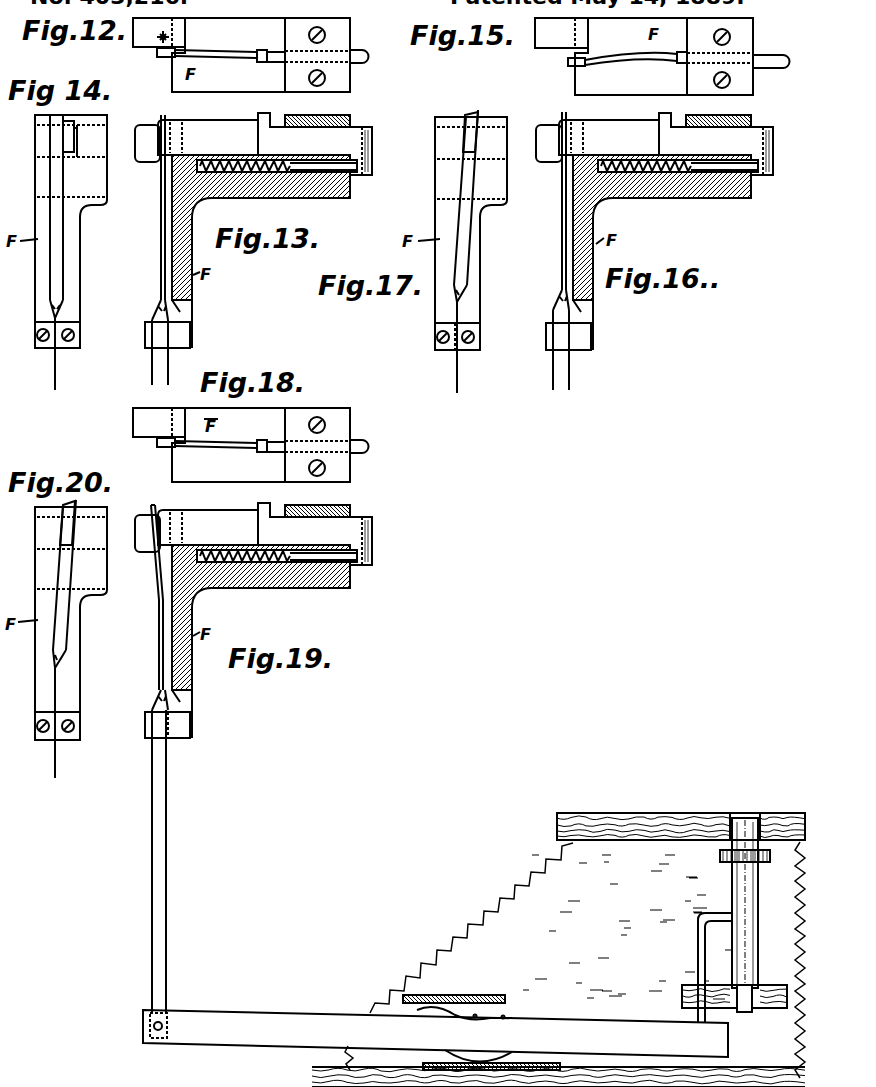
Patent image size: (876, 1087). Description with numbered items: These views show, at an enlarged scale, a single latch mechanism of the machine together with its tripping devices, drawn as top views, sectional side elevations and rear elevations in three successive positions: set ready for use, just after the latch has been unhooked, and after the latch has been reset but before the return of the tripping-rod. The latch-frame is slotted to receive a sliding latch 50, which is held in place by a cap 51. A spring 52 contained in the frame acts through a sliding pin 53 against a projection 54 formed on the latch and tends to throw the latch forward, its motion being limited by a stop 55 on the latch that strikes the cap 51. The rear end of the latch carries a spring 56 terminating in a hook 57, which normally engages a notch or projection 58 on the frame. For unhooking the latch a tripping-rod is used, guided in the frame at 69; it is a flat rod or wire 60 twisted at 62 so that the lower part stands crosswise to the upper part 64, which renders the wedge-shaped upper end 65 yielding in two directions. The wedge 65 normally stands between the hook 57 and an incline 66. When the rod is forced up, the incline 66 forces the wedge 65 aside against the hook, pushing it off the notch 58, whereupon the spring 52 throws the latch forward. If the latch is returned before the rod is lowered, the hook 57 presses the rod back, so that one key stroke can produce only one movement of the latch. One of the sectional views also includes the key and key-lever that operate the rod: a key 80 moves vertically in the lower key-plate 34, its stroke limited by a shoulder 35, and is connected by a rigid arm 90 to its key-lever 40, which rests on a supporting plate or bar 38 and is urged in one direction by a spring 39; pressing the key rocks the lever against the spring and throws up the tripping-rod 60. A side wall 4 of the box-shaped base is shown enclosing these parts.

In FIG. 19, the side wall 4 is at (507, 947).
In FIG. 19, the lower key-plate 34 is at (683, 996).
In FIG. 19, the shoulder 35 is at (720, 854).
In FIG. 19, the supporting plate or bar 38 is at (484, 996).
In FIG. 19, the spring 39 is at (453, 1008).
In FIG. 19, the key-lever 40 is at (435, 1036).
In FIG. 12, the sliding latch 50 is at (357, 60).
In FIG. 14, the sliding latch 50 is at (78, 145).
In FIG. 13, the sliding latch 50 is at (315, 144).
In FIG. 15, the sliding latch 50 is at (770, 62).
In FIG. 16, the sliding latch 50 is at (716, 144).
In FIG. 18, the sliding latch 50 is at (357, 450).
In FIG. 19, the sliding latch 50 is at (354, 524).
In FIG. 12, the cap 51 is at (302, 88).
In FIG. 13, the cap 51 is at (317, 111).
In FIG. 15, the cap 51 is at (747, 83).
In FIG. 16, the cap 51 is at (720, 112).
In FIG. 18, the cap 51 is at (327, 470).
In FIG. 19, the cap 51 is at (317, 502).
In FIG. 13, the spring 52 is at (216, 180).
In FIG. 16, the spring 52 is at (690, 182).
In FIG. 19, the spring 52 is at (264, 617).
In FIG. 13, the sliding pin 53 is at (312, 194).
In FIG. 16, the sliding pin 53 is at (752, 194).
In FIG. 19, the sliding pin 53 is at (312, 584).
In FIG. 13, the projection 54 is at (361, 173).
In FIG. 16, the projection 54 is at (762, 173).
In FIG. 19, the projection 54 is at (361, 563).
In FIG. 12, the stop 55 is at (263, 62).
In FIG. 15, the stop 55 is at (682, 63).
In FIG. 18, the stop 55 is at (264, 452).
In FIG. 12, the spring 56 is at (233, 58).
In FIG. 13, the spring 56 is at (225, 128).
In FIG. 15, the spring 56 is at (638, 62).
In FIG. 16, the spring 56 is at (622, 132).
In FIG. 18, the spring 56 is at (224, 448).
In FIG. 19, the spring 56 is at (226, 518).
In FIG. 12, the hook 57 is at (160, 57).
In FIG. 14, the hook 57 is at (75, 130).
In FIG. 15, the hook 57 is at (580, 63).
In FIG. 18, the hook 57 is at (160, 447).
In FIG. 12, the notch or projection 58 is at (185, 47).
In FIG. 15, the notch or projection 58 is at (585, 47).
In FIG. 14, the tripping-rod 60 is at (57, 372).
In FIG. 13, the tripping-rod 60 is at (155, 370).
In FIG. 17, the tripping-rod 60 is at (459, 381).
In FIG. 16, the tripping-rod 60 is at (556, 376).
In FIG. 20, the tripping-rod 60 is at (57, 762).
In FIG. 19, the tripping-rod 60 is at (155, 762).
In FIG. 14, the twist 62 is at (62, 300).
In FIG. 13, the twist 62 is at (158, 306).
In FIG. 17, the twist 62 is at (467, 290).
In FIG. 16, the twist 62 is at (559, 296).
In FIG. 20, the twist 62 is at (62, 682).
In FIG. 19, the twist 62 is at (158, 696).
In FIG. 14, the upper part of tripping-rod 64 is at (58, 262).
In FIG. 13, the upper part of tripping-rod 64 is at (160, 243).
In FIG. 17, the upper part of tripping-rod 64 is at (462, 250).
In FIG. 16, the upper part of tripping-rod 64 is at (561, 240).
In FIG. 20, the upper part of tripping-rod 64 is at (58, 642).
In FIG. 19, the upper part of tripping-rod 64 is at (159, 630).
In FIG. 14, the wedge-shaped upper end 65 is at (66, 152).
In FIG. 17, the wedge-shaped upper end 65 is at (479, 112).
In FIG. 20, the wedge-shaped upper end 65 is at (74, 520).
In FIG. 19, the wedge-shaped upper end 65 is at (152, 508).
In FIG. 14, the incline 66 is at (71, 231).
In FIG. 13, the incline 66 is at (147, 143).
In FIG. 17, the incline 66 is at (471, 233).
In FIG. 16, the incline 66 is at (550, 152).
In FIG. 18, the incline 66 is at (159, 422).
In FIG. 20, the incline 66 is at (71, 623).
In FIG. 19, the incline 66 is at (147, 533).
In FIG. 14, the guide 69 is at (80, 335).
In FIG. 13, the guide 69 is at (145, 335).
In FIG. 17, the guide 69 is at (480, 335).
In FIG. 16, the guide 69 is at (546, 335).
In FIG. 20, the guide 69 is at (80, 725).
In FIG. 19, the guide 69 is at (145, 725).
In FIG. 19, the key 80 is at (742, 828).
In FIG. 19, the rigid arm 90 is at (698, 950).